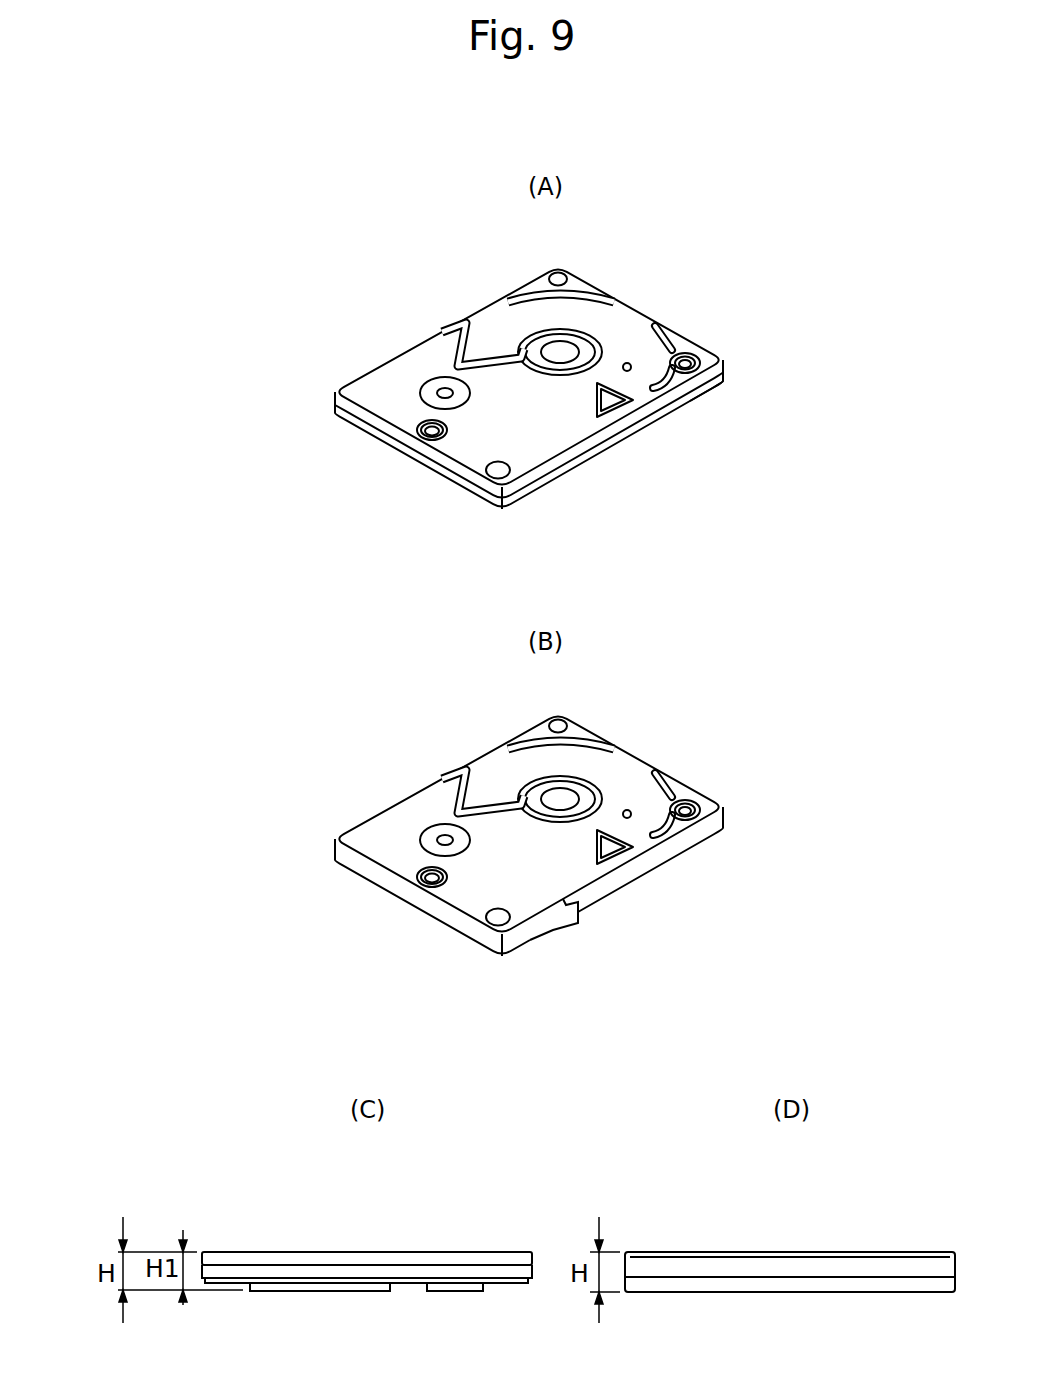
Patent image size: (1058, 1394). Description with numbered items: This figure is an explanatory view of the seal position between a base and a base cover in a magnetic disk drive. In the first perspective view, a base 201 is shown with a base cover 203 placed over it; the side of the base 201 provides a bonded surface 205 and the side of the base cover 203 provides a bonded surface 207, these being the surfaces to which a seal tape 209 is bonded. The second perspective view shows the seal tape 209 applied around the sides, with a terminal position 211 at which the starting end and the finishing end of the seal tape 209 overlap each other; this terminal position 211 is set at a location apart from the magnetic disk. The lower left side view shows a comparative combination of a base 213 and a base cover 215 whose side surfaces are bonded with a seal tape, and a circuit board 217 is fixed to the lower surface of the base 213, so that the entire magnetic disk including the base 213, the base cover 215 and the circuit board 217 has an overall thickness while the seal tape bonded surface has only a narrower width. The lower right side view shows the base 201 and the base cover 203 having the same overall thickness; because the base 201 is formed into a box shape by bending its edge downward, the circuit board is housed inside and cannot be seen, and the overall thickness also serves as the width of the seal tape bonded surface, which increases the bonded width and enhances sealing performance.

The base 201 is at (453, 483).
The base cover 203 is at (390, 377).
The bonded surface 205 is at (718, 385).
The bonded surface 207 is at (725, 365).
The seal tape 209 is at (529, 878).
The terminal position 211 is at (590, 966).
The base 213 is at (537, 1267).
The base cover 215 is at (395, 1250).
The circuit board 217 is at (513, 1285).